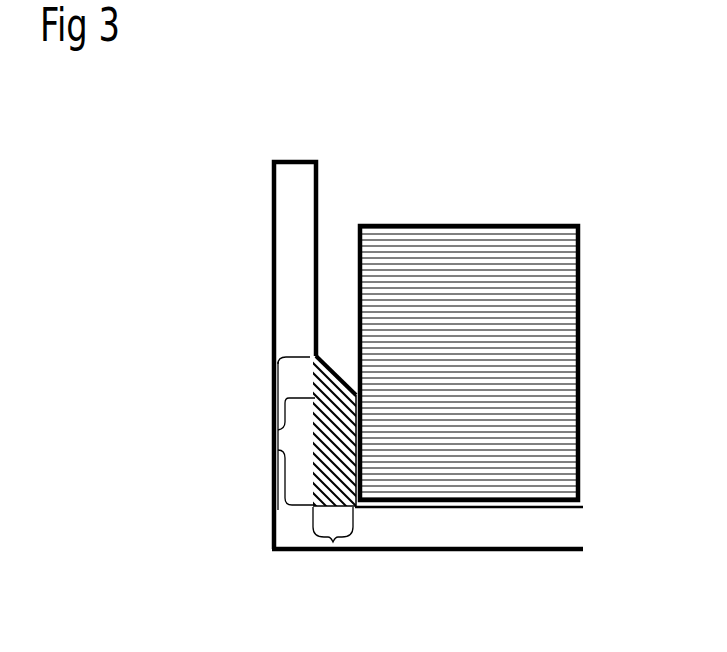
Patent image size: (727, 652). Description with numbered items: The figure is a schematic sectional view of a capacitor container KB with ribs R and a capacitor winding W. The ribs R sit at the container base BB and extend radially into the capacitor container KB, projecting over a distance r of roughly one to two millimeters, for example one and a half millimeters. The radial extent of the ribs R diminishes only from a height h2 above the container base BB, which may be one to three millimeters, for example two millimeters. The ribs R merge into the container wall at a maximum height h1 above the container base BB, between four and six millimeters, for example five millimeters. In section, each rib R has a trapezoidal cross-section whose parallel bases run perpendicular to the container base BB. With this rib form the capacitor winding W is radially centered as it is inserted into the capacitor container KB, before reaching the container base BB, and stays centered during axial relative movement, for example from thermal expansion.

The capacitor container KB is at (283, 208).
The container base BB is at (427, 538).
The capacitor winding W is at (538, 243).
The rib R is at (312, 375).
The maximum height h1 is at (278, 430).
The maximum height h2 is at (278, 450).
The distance r is at (333, 542).